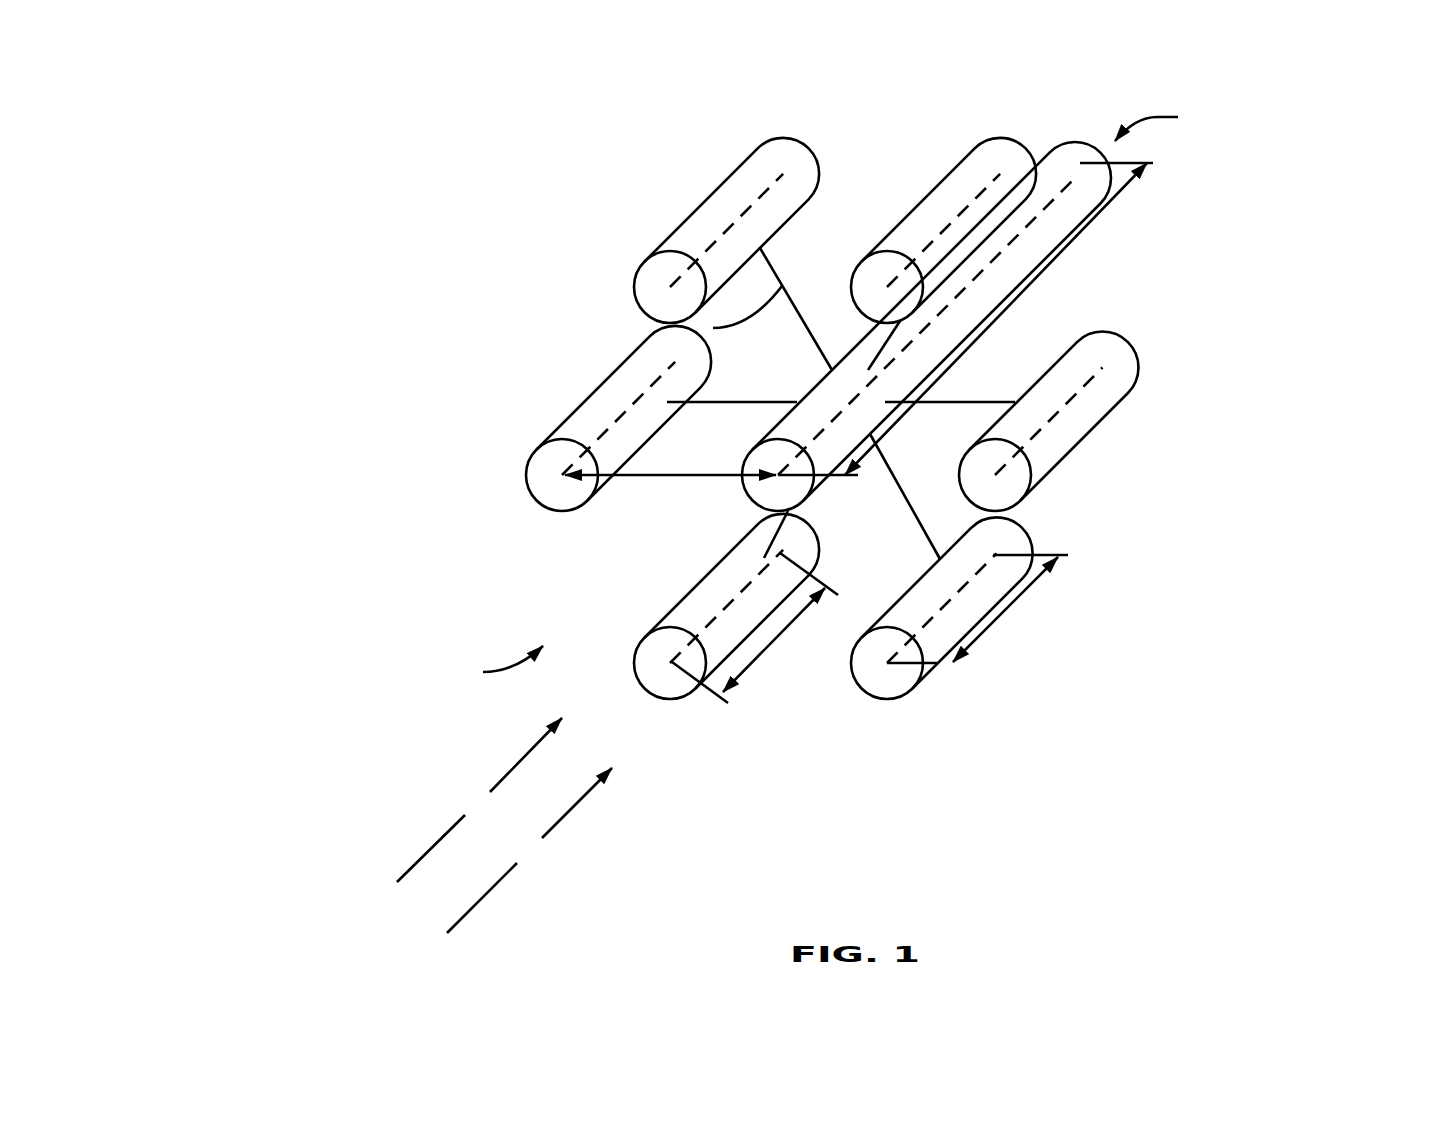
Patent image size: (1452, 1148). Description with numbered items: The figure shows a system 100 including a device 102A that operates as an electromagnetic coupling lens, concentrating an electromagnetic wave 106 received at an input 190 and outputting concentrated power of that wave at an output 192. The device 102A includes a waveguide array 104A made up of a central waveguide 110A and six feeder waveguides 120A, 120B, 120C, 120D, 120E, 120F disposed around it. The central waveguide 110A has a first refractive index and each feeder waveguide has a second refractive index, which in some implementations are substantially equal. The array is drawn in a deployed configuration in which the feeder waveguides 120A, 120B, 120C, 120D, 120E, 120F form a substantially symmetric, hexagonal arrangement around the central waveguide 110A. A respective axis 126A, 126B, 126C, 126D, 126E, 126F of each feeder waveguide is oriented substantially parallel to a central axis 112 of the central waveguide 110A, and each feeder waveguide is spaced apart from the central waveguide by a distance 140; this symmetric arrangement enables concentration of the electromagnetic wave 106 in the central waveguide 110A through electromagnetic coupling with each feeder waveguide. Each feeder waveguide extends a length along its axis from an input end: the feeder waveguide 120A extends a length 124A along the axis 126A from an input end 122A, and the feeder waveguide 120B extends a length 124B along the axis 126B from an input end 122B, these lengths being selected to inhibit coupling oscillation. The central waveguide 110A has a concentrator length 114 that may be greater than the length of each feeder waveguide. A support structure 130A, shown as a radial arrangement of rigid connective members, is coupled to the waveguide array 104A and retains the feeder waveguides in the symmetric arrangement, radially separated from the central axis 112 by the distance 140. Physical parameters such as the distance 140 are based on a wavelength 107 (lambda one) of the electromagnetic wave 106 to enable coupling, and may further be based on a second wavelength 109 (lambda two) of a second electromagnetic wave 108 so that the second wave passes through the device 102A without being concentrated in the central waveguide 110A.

The system 100 is at (250, 141).
The device 102A is at (430, 262).
The waveguide array 104A is at (1172, 138).
The electromagnetic wave 106 is at (503, 779).
The wavelength 107 is at (453, 795).
The second electromagnetic wave 108 is at (557, 823).
The second wavelength 109 is at (544, 869).
The central waveguide 110A is at (1027, 167).
The central axis 112 is at (1069, 176).
The concentrator length 114 is at (1068, 244).
The feeder waveguide 120A is at (930, 675).
The feeder waveguide 120B is at (662, 622).
The feeder waveguide 120C is at (545, 441).
The feeder waveguide 120D is at (722, 184).
The feeder waveguide 120E is at (953, 172).
The feeder waveguide 120F is at (1092, 432).
The input end 122A is at (900, 702).
The input end 122B is at (678, 714).
The length 124A is at (1003, 613).
The length 124B is at (738, 678).
The axis 126A is at (977, 570).
The axis 126B is at (725, 607).
The axis 126C is at (617, 420).
The axis 126D is at (724, 233).
The axis 126E is at (940, 234).
The axis 126F is at (1087, 385).
The support structure 130A is at (713, 328).
The distance 140 is at (633, 477).
The input 190 is at (480, 681).
The output 192 is at (1210, 123).